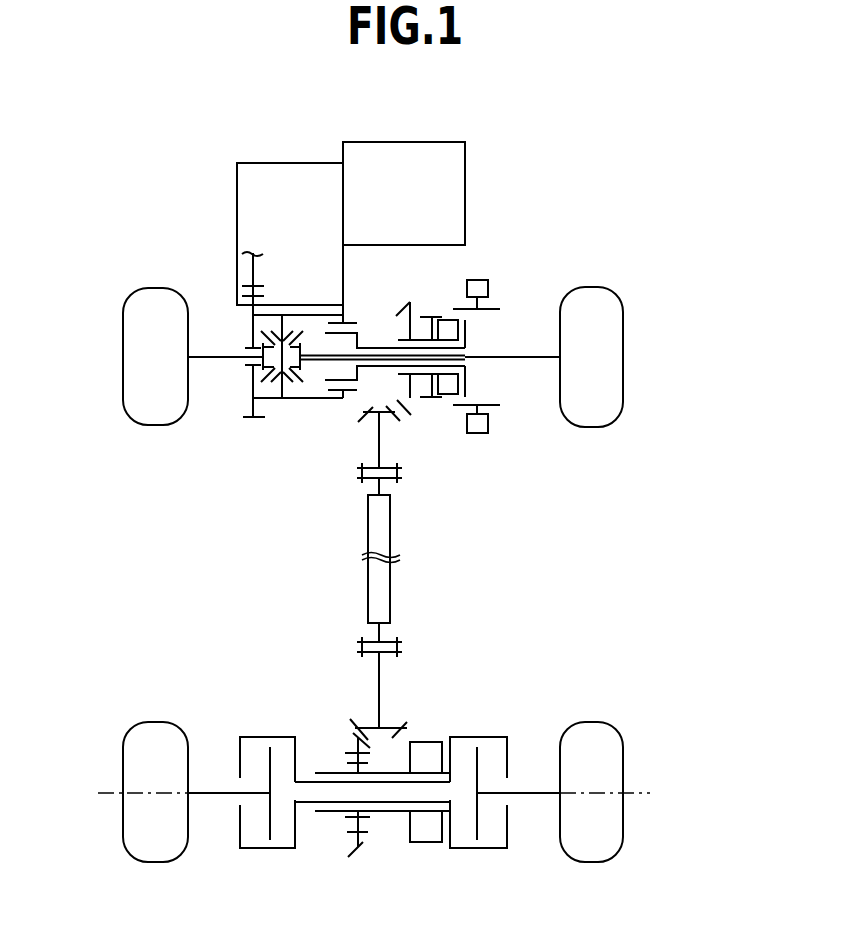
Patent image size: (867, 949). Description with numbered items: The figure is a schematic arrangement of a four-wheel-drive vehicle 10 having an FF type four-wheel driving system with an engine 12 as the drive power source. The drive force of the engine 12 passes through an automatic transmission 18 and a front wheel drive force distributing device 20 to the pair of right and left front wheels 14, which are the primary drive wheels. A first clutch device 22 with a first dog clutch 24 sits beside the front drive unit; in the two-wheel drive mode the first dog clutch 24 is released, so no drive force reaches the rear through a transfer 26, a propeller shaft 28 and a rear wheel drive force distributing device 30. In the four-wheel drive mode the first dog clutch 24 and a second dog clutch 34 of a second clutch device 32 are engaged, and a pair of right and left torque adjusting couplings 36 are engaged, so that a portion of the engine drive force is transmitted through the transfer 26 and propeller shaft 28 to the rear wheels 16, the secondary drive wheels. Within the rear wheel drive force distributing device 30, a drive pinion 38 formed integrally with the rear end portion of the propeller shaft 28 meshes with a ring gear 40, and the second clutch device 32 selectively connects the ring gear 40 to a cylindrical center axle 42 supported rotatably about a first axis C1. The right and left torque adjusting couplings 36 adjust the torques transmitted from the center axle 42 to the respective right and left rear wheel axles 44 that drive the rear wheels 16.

The 4-wheel-drive vehicle 10 is at (528, 74).
The engine 12 is at (425, 158).
The front wheels 14 is at (155, 303).
The rear wheels 16 is at (152, 848).
The automatic transmission 18 is at (290, 175).
The front wheel drive force distributing device 20 is at (255, 437).
The first clutch device 22 is at (512, 270).
The first dog clutch 24 is at (455, 435).
The transfer 26 is at (368, 266).
The propeller shaft 28 is at (383, 578).
The rear wheel drive force distributing device 30 is at (232, 654).
The second clutch device 32 is at (448, 716).
The second dog clutch 34 is at (387, 841).
The torque adjusting couplings 36 is at (258, 868).
The drive pinion 38 is at (407, 728).
The ring gear 40 is at (356, 726).
The center axle 42 is at (306, 803).
The rear wheel axles 44 is at (217, 793).
The first axis C1 is at (124, 791).